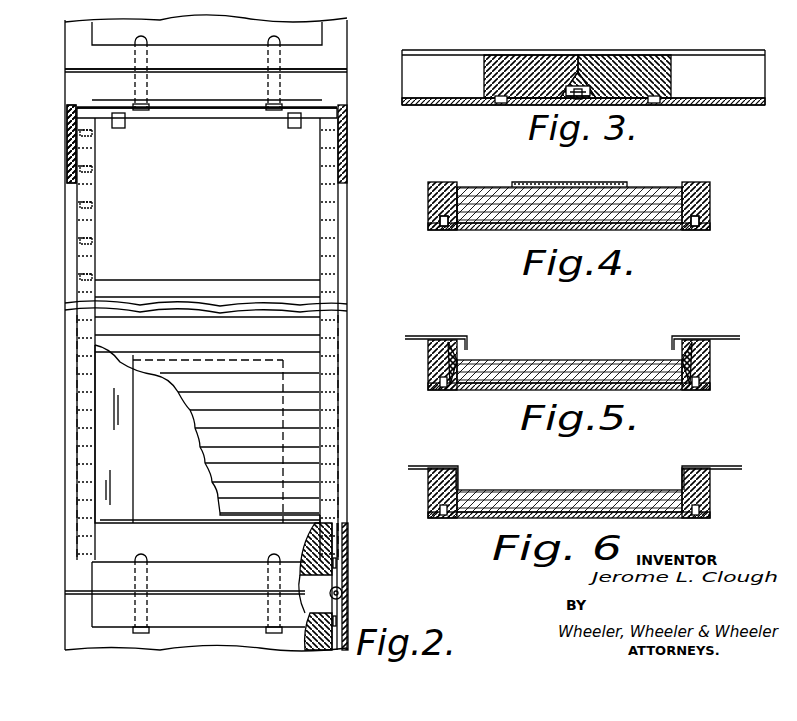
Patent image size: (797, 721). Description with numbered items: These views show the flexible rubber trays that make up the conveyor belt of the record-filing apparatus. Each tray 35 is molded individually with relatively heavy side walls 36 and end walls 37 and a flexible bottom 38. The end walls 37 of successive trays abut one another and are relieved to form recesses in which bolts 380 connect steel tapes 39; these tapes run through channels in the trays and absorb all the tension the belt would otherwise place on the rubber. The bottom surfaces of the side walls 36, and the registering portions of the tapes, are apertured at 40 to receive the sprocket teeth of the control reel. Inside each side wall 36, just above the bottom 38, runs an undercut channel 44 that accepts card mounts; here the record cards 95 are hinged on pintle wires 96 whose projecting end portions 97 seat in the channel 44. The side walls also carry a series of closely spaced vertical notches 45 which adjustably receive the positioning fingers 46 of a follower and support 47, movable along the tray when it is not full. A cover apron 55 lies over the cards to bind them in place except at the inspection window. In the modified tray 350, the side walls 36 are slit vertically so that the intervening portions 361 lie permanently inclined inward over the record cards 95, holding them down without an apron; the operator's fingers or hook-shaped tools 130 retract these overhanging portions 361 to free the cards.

In FIG. 2, the tray 35 is at (54, 369).
In FIG. 4, the tray 35 is at (722, 198).
In FIG. 2, the side walls 36 is at (68, 281).
In FIG. 4, the side walls 36 is at (434, 182).
In FIG. 5, the side walls 36 is at (428, 352).
In FIG. 6, the side walls 36 is at (428, 483).
In FIG. 2, the end walls 37 is at (80, 88).
In FIG. 3, the end walls 37 is at (600, 55).
In FIG. 2, the flexible bottom 38 is at (113, 542).
In FIG. 3, the flexible bottom 38 is at (450, 105).
In FIG. 4, the flexible bottom 38 is at (652, 230).
In FIG. 2, the steel tapes 39 is at (337, 545).
In FIG. 3, the steel tapes 39 is at (484, 75).
In FIG. 4, the steel tapes 39 is at (434, 220).
In FIG. 3, the apertures 40 is at (500, 103).
In FIG. 4, the apertures 40 is at (444, 230).
In FIG. 2, the channel 44 is at (68, 142).
In FIG. 4, the channel 44 is at (458, 231).
In FIG. 2, the vertical channels 45 is at (92, 262).
In FIG. 2, the positioning fingers 46 is at (95, 500).
In FIG. 2, the follower and support 47 is at (108, 467).
In FIG. 4, the apron 55 is at (562, 186).
In FIG. 2, the record cards 95 is at (223, 328).
In FIG. 4, the record cards 95 is at (640, 210).
In FIG. 5, the record cards 95 is at (525, 375).
In FIG. 6, the record cards 95 is at (545, 493).
In FIG. 2, the pintle wires 96 is at (276, 110).
In FIG. 2, the end portions 97 is at (68, 162).
In FIG. 5, the hook-shaped tools 130 is at (466, 349).
In FIG. 6, the hook-shaped tools 130 is at (465, 480).
In FIG. 3, the tray 350 is at (576, 103).
In FIG. 5, the tray 350 is at (421, 389).
In FIG. 6, the tray 350 is at (421, 515).
In FIG. 5, the side wall portions 361 is at (455, 342).
In FIG. 6, the side wall portions 361 is at (456, 466).
In FIG. 2, the bolts 380 is at (342, 593).